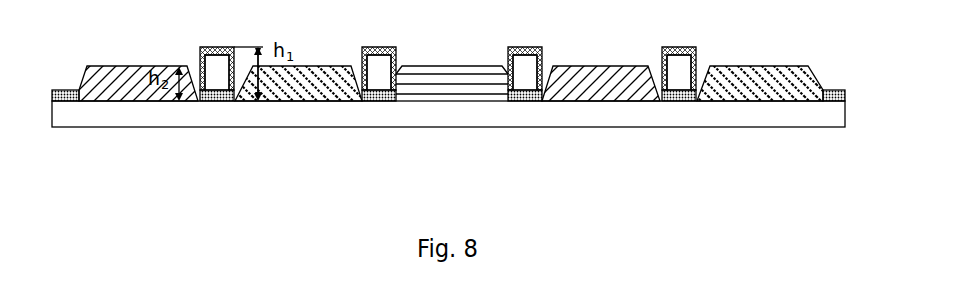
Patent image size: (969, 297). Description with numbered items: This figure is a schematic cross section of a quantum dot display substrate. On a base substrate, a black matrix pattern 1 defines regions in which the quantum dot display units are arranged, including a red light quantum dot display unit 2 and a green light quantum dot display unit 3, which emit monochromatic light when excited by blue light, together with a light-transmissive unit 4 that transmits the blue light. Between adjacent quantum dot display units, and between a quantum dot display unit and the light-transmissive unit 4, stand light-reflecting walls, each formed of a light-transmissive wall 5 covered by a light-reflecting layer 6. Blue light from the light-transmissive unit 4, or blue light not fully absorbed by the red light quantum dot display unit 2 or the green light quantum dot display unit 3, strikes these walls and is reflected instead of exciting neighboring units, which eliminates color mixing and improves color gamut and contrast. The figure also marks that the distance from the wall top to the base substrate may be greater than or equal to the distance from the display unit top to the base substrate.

The black matrix pattern 1 is at (67, 102).
The red light quantum dot display unit 2 is at (148, 102).
The green light quantum dot display unit 3 is at (270, 102).
The light-transmissive unit 4 is at (442, 102).
The light-transmissive wall 5 is at (380, 78).
The light-reflecting layer 6 is at (525, 58).